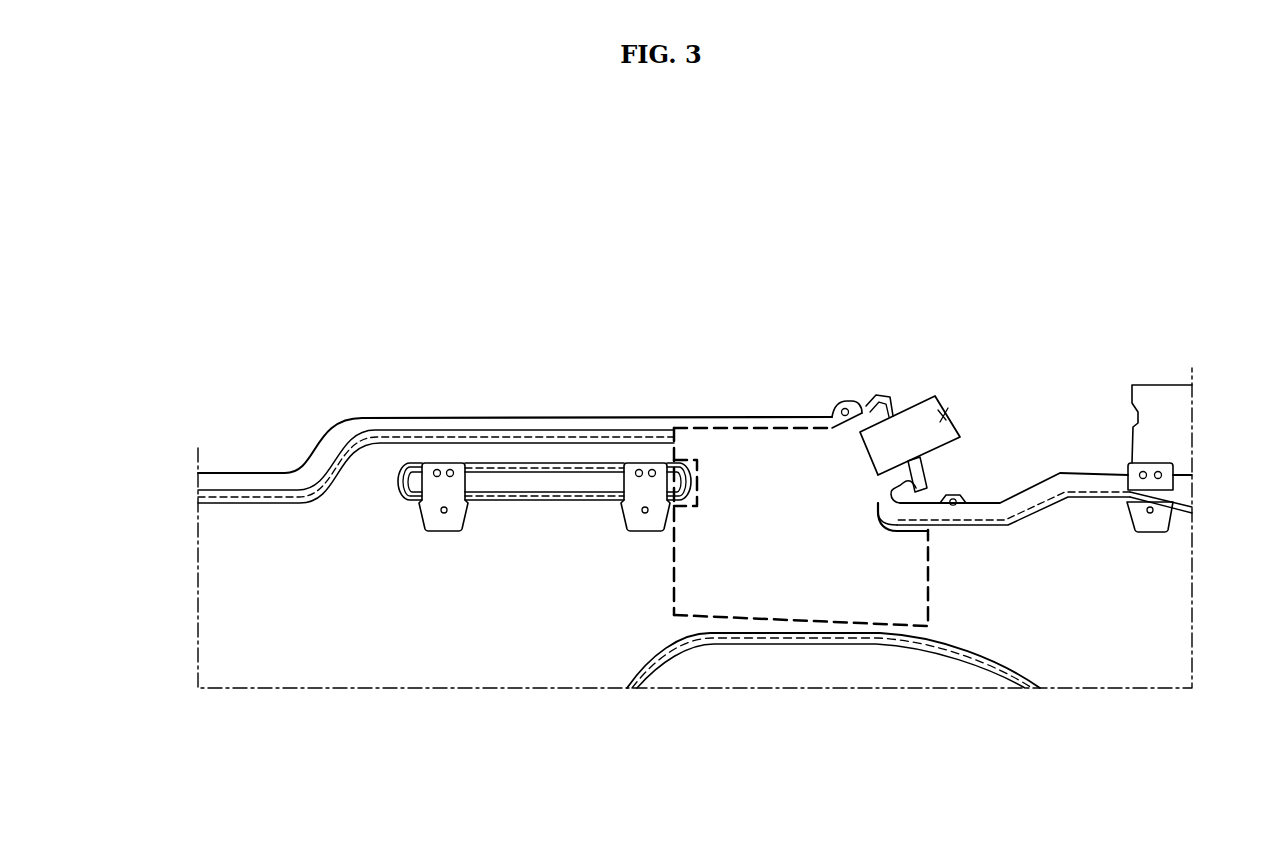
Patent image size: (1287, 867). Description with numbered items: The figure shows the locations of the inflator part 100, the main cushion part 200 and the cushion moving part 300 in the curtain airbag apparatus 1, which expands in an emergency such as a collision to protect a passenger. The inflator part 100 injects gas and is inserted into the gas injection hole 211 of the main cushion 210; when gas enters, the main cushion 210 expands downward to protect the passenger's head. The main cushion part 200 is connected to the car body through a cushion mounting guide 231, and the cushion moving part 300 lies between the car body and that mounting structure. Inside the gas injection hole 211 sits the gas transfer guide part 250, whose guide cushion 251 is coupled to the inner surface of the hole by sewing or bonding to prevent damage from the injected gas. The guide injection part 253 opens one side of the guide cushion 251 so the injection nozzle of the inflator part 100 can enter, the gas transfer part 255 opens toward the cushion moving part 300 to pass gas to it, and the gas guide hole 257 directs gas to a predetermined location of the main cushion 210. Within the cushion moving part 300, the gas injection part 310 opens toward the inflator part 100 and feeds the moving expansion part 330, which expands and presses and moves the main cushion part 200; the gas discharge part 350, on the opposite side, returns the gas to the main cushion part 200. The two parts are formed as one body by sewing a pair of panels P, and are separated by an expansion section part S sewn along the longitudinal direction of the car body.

The curtain airbag apparatus 1 is at (1204, 220).
The panel P is at (253, 485).
The expansion section part S is at (533, 472).
The inflator part 100 is at (942, 415).
The main cushion part 200 is at (1065, 381).
The main cushion 210 is at (1093, 480).
The gas injection hole 211 is at (927, 483).
The cushion mounting guide 231 is at (437, 523).
The gas transfer guide part 250 is at (917, 279).
The guide cushion 251 is at (748, 477).
The guide injection part 253 is at (868, 402).
The gas transfer part 255 is at (675, 445).
The gas guide hole 257 is at (677, 575).
The cushion moving part 300 is at (407, 320).
The gas injection part 310 is at (668, 455).
The moving expansion part 330 is at (542, 456).
The gas discharge part 350 is at (404, 456).